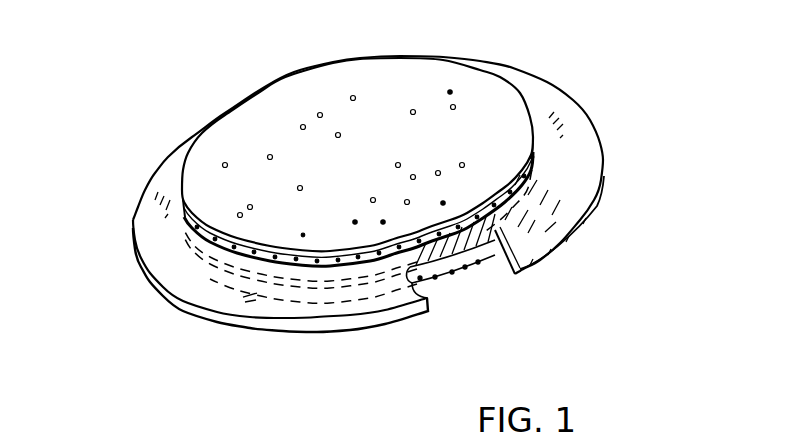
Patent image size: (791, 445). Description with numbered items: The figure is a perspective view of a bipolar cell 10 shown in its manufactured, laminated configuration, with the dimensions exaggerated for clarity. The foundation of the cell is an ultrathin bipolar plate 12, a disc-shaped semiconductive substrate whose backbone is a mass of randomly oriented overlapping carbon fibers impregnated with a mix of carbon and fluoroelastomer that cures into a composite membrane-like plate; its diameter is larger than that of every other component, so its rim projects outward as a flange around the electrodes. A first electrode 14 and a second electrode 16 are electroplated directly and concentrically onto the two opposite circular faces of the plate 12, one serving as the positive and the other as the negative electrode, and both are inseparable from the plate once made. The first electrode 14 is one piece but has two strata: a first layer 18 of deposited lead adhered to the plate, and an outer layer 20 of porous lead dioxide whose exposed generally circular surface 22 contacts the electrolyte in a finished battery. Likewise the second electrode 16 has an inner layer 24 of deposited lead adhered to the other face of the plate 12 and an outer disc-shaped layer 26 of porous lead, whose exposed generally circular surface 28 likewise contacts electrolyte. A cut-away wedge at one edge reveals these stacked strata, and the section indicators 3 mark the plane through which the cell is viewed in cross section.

The bipolar cell 10 is at (196, 100).
The bipolar plate 12 is at (171, 312).
The first electrode 14 is at (170, 165).
The second electrode 16 is at (476, 290).
The first layer 18 is at (475, 232).
The outer layer 20 is at (300, 255).
The exposed circular surface 22 is at (320, 84).
The inner layer 24 is at (427, 248).
The cut face of flange 26 is at (510, 268).
The exposed circular surface 28 is at (447, 284).
The section line 3- 3 is at (127, 237).